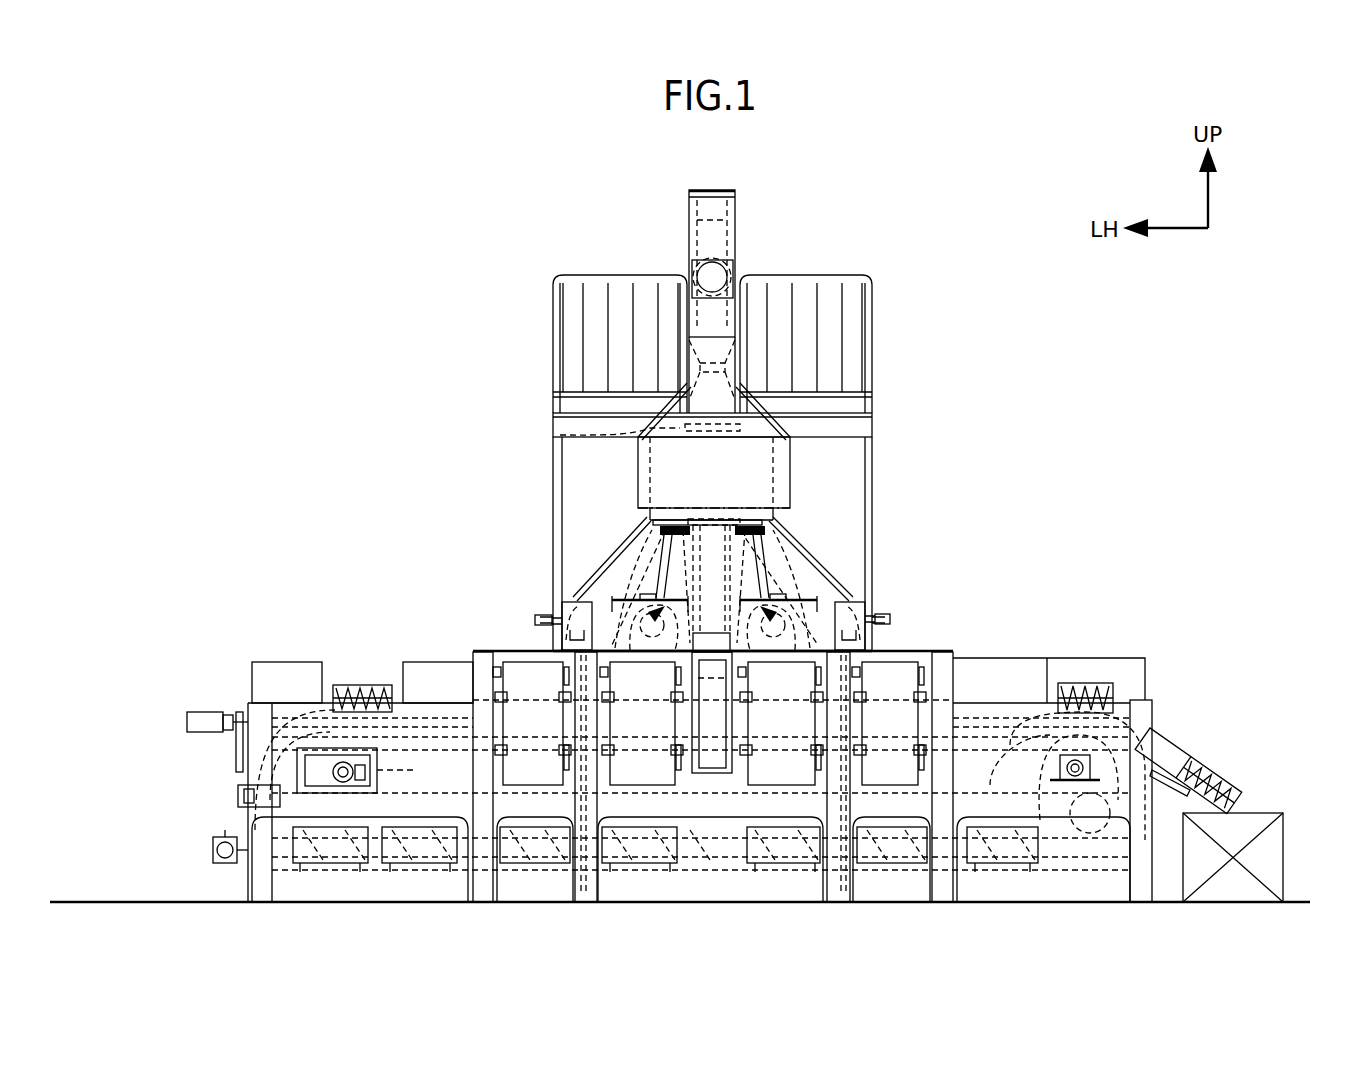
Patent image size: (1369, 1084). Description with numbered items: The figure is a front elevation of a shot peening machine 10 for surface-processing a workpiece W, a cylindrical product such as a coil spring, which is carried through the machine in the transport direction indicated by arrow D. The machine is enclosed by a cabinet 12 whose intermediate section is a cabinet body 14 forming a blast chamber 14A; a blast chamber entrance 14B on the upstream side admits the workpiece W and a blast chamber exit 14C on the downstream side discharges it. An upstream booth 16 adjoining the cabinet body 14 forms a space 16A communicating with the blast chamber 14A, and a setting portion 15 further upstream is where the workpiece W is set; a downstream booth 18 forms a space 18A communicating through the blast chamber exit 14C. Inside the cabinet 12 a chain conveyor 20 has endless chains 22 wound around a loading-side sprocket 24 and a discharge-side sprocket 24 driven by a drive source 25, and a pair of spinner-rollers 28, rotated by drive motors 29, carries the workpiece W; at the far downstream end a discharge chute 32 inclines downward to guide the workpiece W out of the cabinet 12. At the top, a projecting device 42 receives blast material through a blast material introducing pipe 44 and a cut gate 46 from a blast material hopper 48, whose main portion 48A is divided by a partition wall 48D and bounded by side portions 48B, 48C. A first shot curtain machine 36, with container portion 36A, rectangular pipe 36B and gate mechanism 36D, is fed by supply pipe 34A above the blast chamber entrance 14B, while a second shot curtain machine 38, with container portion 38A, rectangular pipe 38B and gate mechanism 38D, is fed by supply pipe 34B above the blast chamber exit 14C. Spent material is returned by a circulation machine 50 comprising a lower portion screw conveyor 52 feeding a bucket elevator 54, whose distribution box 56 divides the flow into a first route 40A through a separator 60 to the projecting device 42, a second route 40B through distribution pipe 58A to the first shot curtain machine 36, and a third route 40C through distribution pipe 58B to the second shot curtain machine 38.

The shot peening machine 10 is at (1140, 343).
The cabinet 12 is at (905, 650).
The cabinet body 14 is at (622, 647).
The blast chamber 14A is at (862, 549).
The blast chamber entrance 14B is at (565, 684).
The blast chamber exit 14C is at (852, 684).
The setting portion 15 is at (331, 675).
The upstream booth 16 is at (491, 655).
The space 16A is at (500, 655).
The downstream booth 18 is at (935, 652).
The space 18A is at (935, 655).
The chain conveyor 20 is at (1130, 740).
The endless chains 22 is at (970, 792).
The sprocket 24 is at (345, 750).
The drive source 25 is at (1065, 806).
The spinner-rollers 28 is at (935, 745).
The drive motors 29 is at (207, 712).
The discharge chute 32 is at (1190, 755).
The supply pipe 34A is at (565, 597).
The supply pipe 34B is at (868, 597).
The first shot curtain machine 36 is at (562, 605).
The container portion 36A is at (555, 608).
The rectangular pipe 36B is at (535, 617).
The gate mechanism 36D is at (548, 620).
The second shot curtain machine 38 is at (870, 600).
The container portion 38A is at (870, 607).
The rectangular pipe 38B is at (888, 618).
The gate mechanism 38D is at (880, 617).
The first route 40A is at (700, 388).
The second route 40B is at (662, 403).
The third route 40C is at (775, 397).
The projecting device 42 is at (650, 572).
The blast material introducing pipe 44 is at (662, 612).
The cut gate 46 is at (648, 560).
The blast material hopper 48 is at (792, 452).
The main portion 48A is at (795, 430).
The side portion 48B is at (638, 458).
The side portion 48C is at (773, 468).
The partition wall 48D is at (655, 485).
The circulation machine 50 is at (680, 230).
The lower portion screw conveyor 52 is at (692, 870).
The bucket elevator 54 is at (727, 190).
The distribution box 56 is at (738, 213).
The distribution pipe 58A is at (560, 433).
The distribution pipe 58B is at (770, 410).
The separator 60 is at (740, 268).
The workpiece W is at (362, 683).
The arrow D is at (1043, 703).